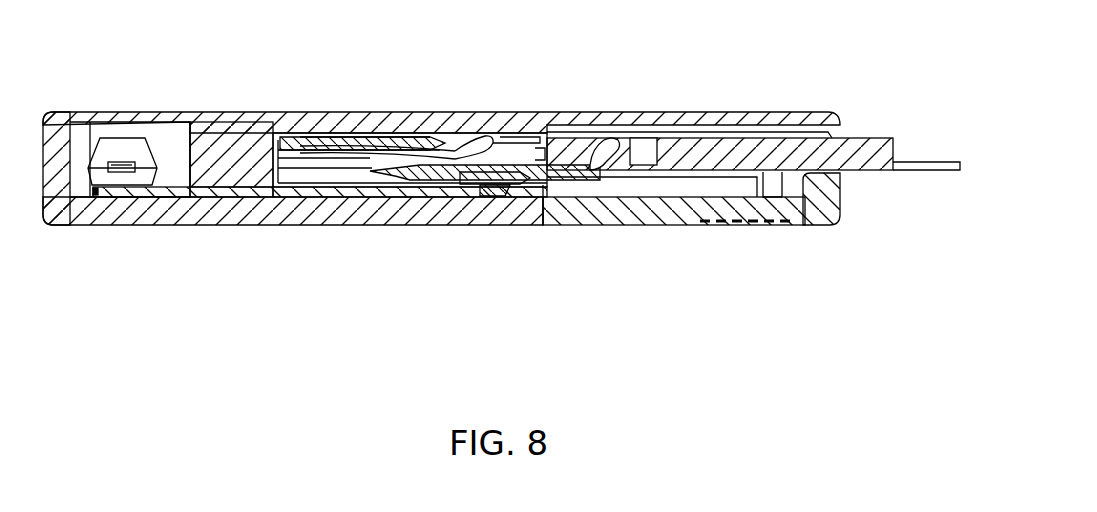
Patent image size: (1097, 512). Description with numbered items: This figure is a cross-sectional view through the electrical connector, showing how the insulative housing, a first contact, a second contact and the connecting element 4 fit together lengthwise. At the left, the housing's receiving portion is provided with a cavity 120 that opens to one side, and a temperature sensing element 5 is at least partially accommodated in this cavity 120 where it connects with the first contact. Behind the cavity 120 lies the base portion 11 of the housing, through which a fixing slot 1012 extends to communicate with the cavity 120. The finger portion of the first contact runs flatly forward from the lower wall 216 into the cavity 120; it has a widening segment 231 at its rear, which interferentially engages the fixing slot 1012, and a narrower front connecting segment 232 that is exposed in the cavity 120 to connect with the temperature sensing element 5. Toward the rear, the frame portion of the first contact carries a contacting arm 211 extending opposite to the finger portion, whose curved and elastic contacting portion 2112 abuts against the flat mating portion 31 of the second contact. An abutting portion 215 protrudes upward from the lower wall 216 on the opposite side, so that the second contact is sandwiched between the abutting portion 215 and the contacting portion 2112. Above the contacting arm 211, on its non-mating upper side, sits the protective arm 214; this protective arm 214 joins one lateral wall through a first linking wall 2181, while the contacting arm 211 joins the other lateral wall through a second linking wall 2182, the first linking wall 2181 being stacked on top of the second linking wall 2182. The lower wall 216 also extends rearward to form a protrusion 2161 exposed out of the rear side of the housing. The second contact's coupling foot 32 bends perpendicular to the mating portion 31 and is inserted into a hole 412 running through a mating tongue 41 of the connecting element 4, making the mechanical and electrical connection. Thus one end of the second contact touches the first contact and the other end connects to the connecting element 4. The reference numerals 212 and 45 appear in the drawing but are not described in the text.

The temperature sensing element 5 is at (116, 148).
The cavity 120 is at (157, 132).
The fixing slot 1012 is at (212, 150).
The base portion 11 is at (236, 122).
The second linking wall 2182 is at (312, 150).
The first linking wall 2181 is at (352, 135).
The protective arm 214 is at (408, 143).
The contacting arm 211 is at (440, 147).
The connecting portion 212 is at (523, 138).
The contacting portion 2112 is at (490, 178).
The abutting portion 215 is at (445, 192).
The protrusion 2161 is at (537, 150).
The lower wall 216 is at (313, 190).
The mating portion 31 is at (405, 172).
The coupling foot 32 is at (616, 148).
The connecting element 4 is at (732, 150).
The hole 412 is at (628, 148).
The mating tongue 41 is at (672, 207).
The side wall 45 is at (823, 180).
The widening segment 231 is at (233, 190).
The connecting segment 232 is at (128, 190).